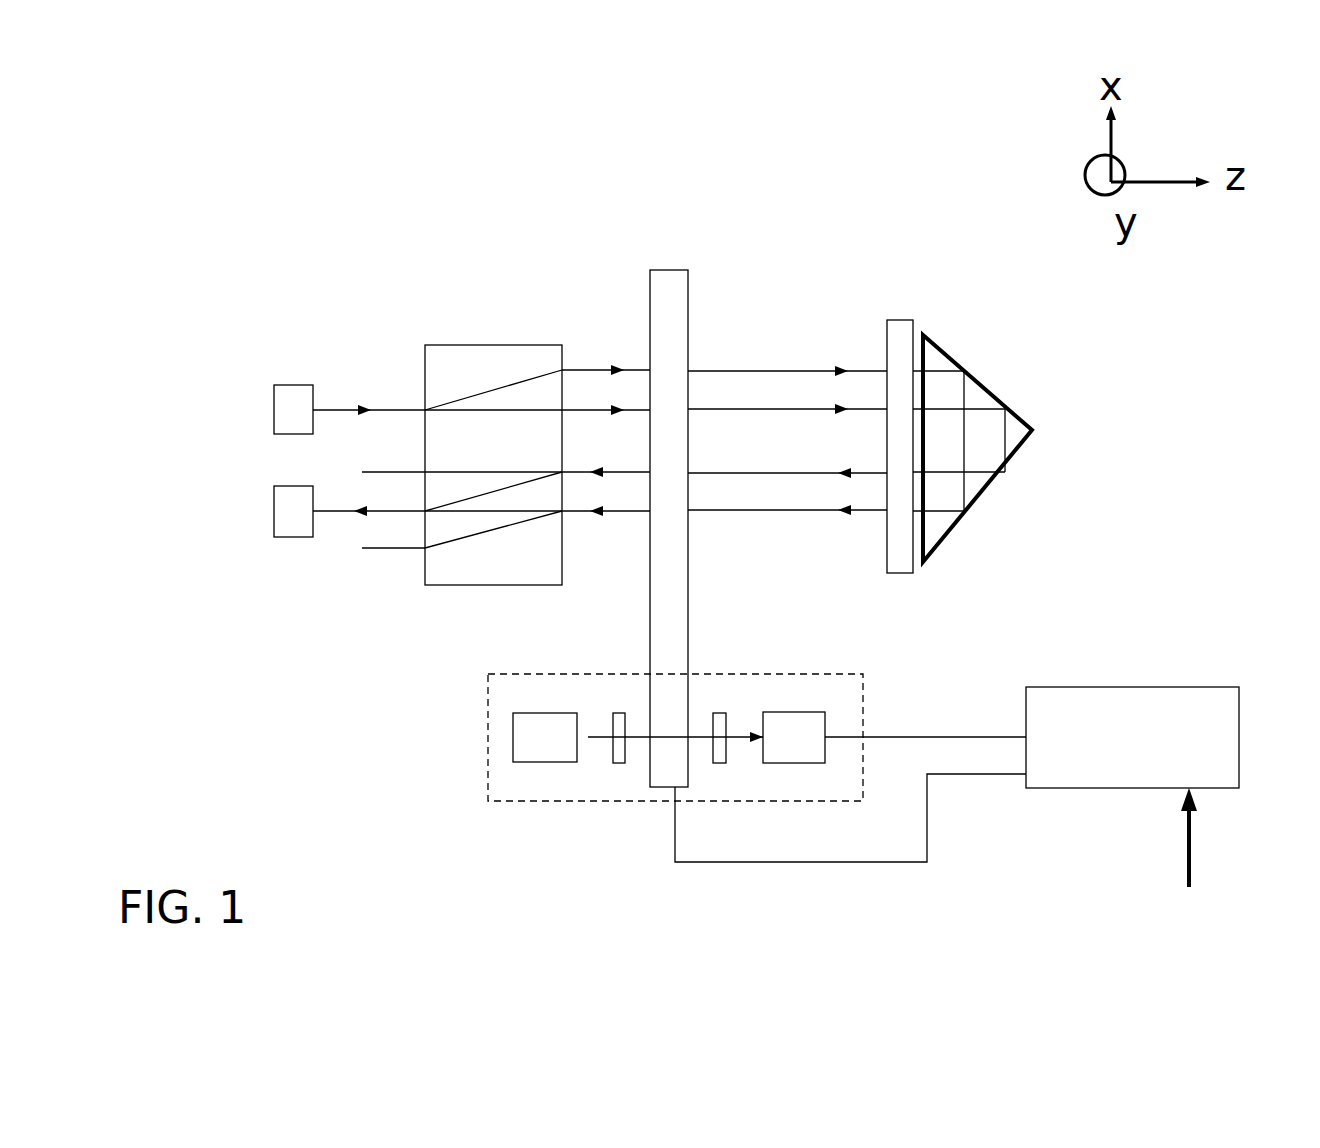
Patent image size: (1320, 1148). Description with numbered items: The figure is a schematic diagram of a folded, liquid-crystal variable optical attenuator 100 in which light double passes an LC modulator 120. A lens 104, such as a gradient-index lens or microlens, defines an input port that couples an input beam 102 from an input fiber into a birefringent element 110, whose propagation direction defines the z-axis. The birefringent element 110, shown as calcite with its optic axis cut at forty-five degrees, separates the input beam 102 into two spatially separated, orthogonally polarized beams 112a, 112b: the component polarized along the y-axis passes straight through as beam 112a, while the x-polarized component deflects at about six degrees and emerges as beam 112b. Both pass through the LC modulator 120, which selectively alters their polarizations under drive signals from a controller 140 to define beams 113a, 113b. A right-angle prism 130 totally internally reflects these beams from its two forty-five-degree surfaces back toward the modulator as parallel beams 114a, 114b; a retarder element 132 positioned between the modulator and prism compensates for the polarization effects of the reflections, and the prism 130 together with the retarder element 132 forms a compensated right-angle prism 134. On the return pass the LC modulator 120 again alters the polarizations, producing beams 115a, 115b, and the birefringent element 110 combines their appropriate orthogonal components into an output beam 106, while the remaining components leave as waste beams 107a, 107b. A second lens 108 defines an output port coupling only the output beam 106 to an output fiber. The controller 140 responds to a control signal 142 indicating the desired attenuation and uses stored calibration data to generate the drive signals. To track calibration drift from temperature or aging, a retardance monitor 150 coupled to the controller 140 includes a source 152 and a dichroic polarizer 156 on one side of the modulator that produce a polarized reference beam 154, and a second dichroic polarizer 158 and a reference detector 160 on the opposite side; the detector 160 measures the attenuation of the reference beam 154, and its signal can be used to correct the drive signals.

The variable optical attenuator 100 is at (304, 185).
The input beam 102 is at (375, 410).
The lens 104 is at (286, 385).
The output beam 106 is at (338, 511).
The waste beam 107a is at (385, 472).
The waste beam 107b is at (399, 548).
The second lens 108 is at (300, 537).
The birefringent element 110 is at (450, 345).
The beam 112a is at (638, 405).
The beam 112b is at (588, 370).
The beam 113a is at (775, 407).
The beam 113b is at (762, 368).
The beam 114a is at (799, 473).
The beam 114b is at (775, 510).
The beam 115a is at (639, 473).
The beam 115b is at (587, 511).
The LC modulator 120 is at (662, 270).
The right-angle prism 130 is at (987, 388).
The retarder element 132 is at (899, 320).
The compensated right-angle prism 134 is at (968, 293).
The controller 140 is at (1138, 687).
The control signal 142 is at (1189, 836).
The retardance monitor 150 is at (540, 801).
The source 152 is at (550, 762).
The reference beam 154 is at (640, 737).
The dichroic polarizer 156 is at (623, 763).
The second dichroic polarizer 158 is at (725, 763).
The reference detector 160 is at (800, 762).